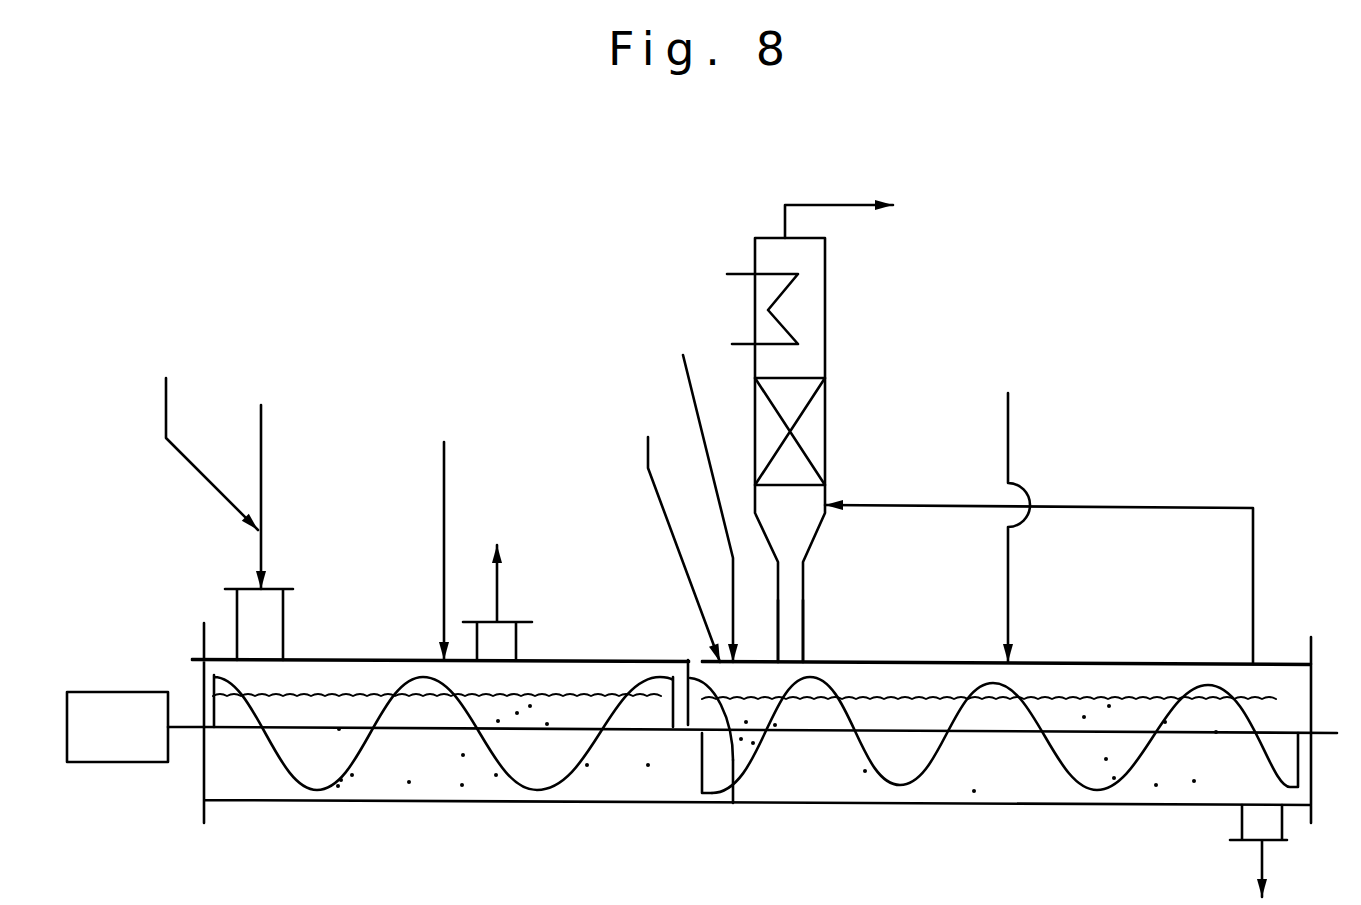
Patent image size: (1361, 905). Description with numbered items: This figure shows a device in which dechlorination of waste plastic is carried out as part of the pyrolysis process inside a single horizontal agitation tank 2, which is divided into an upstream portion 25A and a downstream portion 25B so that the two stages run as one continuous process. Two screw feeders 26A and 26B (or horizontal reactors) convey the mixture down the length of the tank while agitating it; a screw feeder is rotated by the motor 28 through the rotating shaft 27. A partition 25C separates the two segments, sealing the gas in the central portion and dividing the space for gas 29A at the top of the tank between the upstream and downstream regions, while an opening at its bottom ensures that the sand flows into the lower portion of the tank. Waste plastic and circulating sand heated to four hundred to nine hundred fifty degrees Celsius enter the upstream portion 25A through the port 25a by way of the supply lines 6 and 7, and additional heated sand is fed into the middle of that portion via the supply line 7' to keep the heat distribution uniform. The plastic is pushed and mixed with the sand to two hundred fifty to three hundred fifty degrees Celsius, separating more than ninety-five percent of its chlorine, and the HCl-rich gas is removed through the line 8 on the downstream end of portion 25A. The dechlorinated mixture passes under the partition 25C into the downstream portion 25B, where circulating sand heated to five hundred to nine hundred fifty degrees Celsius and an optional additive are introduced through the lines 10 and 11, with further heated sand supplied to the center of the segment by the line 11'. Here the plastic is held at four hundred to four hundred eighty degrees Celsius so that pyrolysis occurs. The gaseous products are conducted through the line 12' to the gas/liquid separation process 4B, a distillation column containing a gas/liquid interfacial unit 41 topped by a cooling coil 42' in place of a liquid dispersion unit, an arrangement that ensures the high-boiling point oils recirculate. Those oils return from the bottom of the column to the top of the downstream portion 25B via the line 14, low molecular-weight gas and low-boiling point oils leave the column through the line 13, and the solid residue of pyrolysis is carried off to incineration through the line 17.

The horizontal agitation tank 2 is at (943, 816).
The gas/liquid separation process 4B is at (818, 530).
The supply line 6 is at (202, 477).
The supply line 7 is at (291, 497).
The supply line 7' is at (471, 551).
The line 8 is at (498, 590).
The line 10 is at (700, 435).
The line 11 is at (679, 549).
The line 11' is at (1051, 527).
The line 12' is at (1088, 582).
The line 13 is at (845, 200).
The line 14 is at (795, 620).
The line 17 is at (1265, 868).
The port 25a is at (237, 606).
The upstream portion 25A is at (555, 807).
The downstream portion 25B is at (1037, 807).
The partition 25C is at (733, 803).
The screw feeder 26A is at (588, 762).
The screw feeder 26B is at (1143, 768).
The rotating shaft 27 is at (848, 752).
The motor 28 is at (135, 762).
The space for gas 29A is at (352, 668).
The gas/liquid interfacial unit 41 is at (820, 452).
The cooling coil 42' is at (813, 309).